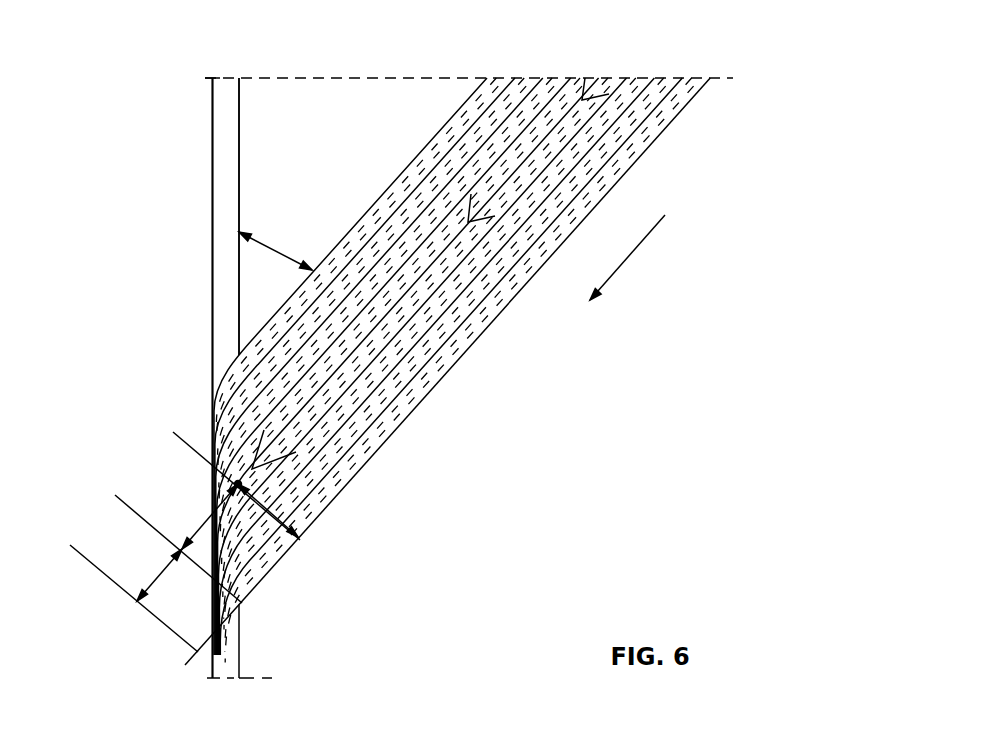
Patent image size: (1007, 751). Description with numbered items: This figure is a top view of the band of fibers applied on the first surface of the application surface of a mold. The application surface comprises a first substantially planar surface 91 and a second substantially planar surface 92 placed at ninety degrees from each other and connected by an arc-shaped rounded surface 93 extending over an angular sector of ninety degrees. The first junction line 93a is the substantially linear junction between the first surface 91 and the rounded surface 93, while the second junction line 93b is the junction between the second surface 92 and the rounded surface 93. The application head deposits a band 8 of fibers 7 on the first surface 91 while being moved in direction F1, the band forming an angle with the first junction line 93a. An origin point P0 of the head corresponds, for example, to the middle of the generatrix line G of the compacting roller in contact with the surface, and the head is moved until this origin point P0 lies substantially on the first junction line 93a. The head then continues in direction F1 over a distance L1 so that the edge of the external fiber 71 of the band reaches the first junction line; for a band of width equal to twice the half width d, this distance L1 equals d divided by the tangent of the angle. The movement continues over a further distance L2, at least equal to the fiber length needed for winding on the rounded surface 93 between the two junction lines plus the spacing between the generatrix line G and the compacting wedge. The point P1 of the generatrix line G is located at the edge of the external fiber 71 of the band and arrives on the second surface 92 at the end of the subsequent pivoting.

The first surface 91 is at (348, 87).
The second surface 92 is at (212, 216).
The rounded surface 93 is at (221, 378).
The first junction line 93a is at (239, 136).
The second junction line 93b is at (212, 160).
The fibers 7 is at (461, 371).
The external fiber 71 is at (436, 387).
The band 8 is at (675, 125).
The direction F1 is at (627, 257).
The origin point P0 is at (238, 481).
The point P1 is at (299, 540).
The generatrix line G is at (177, 435).
The half band width d is at (268, 510).
The distance L1 is at (208, 516).
The distance L2 is at (134, 598).